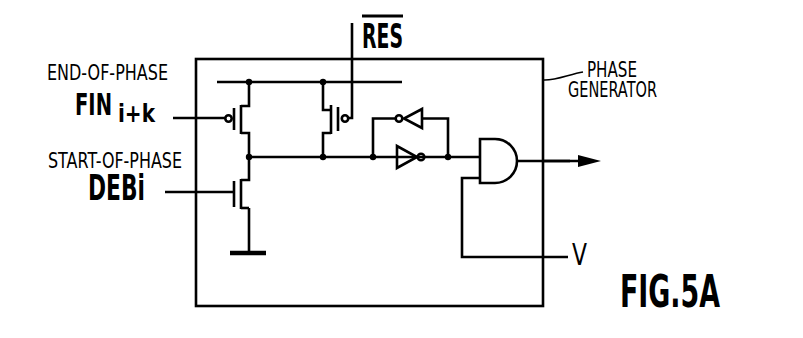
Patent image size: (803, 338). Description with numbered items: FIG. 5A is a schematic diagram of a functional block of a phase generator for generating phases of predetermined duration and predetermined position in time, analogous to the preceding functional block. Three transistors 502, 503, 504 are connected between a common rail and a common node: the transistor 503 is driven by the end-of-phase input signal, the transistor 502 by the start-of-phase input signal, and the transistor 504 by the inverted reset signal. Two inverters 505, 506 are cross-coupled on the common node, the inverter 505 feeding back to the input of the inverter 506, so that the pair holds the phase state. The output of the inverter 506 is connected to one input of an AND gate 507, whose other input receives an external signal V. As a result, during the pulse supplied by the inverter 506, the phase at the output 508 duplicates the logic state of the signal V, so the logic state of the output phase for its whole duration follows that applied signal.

The transistor 502 is at (252, 190).
The transistor 503 is at (250, 119).
The transistor 504 is at (364, 110).
The inverter 505 is at (425, 112).
The inverter 506 is at (414, 169).
The AND gate 507 is at (517, 181).
The output 508 is at (569, 163).